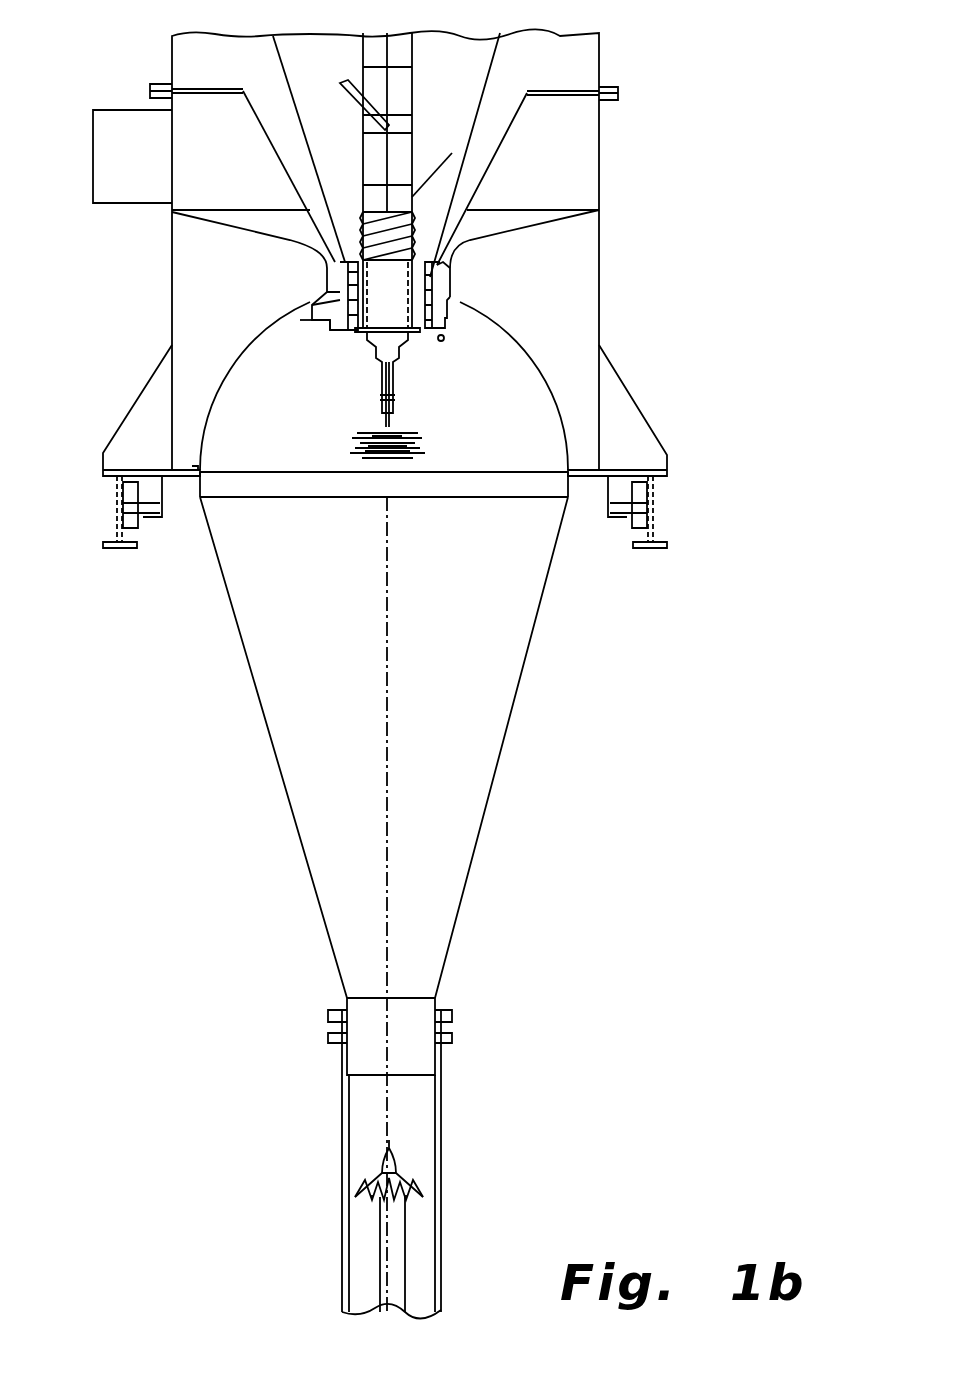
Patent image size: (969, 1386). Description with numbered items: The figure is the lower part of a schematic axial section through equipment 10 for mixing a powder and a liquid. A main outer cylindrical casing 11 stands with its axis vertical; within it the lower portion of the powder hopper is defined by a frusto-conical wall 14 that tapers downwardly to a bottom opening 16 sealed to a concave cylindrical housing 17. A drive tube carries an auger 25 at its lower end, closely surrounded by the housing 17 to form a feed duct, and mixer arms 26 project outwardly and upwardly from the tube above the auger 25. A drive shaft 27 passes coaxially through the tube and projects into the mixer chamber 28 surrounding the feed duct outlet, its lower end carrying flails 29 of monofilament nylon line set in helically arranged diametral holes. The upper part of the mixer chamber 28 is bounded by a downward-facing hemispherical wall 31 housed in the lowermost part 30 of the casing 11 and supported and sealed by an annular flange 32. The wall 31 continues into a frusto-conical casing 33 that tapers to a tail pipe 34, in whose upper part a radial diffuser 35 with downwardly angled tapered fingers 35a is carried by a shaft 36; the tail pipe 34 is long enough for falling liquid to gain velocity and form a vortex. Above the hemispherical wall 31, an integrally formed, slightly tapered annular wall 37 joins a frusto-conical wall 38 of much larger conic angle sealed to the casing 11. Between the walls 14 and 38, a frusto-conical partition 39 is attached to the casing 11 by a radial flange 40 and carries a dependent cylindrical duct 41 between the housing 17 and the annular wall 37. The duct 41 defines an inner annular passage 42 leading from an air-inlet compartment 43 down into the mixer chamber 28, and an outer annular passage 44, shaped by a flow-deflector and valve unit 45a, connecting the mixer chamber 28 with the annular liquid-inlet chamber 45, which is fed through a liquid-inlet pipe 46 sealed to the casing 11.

The equipment 10 is at (96, 78).
The main outer cylindrical casing 11 is at (170, 252).
The frusto-conical wall 14 is at (280, 63).
The bottom opening 16 is at (323, 263).
The cylindrical housing 17 is at (327, 298).
The auger 25 is at (468, 194).
The mixer arms 26 is at (370, 100).
The drive shaft 27 is at (394, 382).
The mixer chamber 28 is at (537, 415).
The flails 29 is at (433, 437).
The lowermost part of the main casing 30 is at (168, 440).
The hemispherical wall 31 is at (570, 452).
The annular flange 32 is at (197, 478).
The frusto-conical casing 33 is at (518, 700).
The tail pipe 34 is at (443, 1115).
The radial diffuser 35 is at (417, 1183).
The tapered fingers 35a is at (390, 1188).
The shaft 36 is at (405, 1255).
The annular wall 37 is at (455, 280).
The frusto-conical wall 38 is at (543, 228).
The frusto-conical partition 39 is at (527, 128).
The radial flange 40 is at (580, 96).
The cylindrical duct 41 is at (333, 285).
The inner annular passage 42 is at (282, 348).
The compartment 43 is at (280, 130).
The outer annular passage 44 is at (450, 297).
The annular chamber 45 is at (588, 171).
The flow-deflector and valve unit 45a is at (337, 330).
The liquid-inlet pipe 46 is at (113, 207).